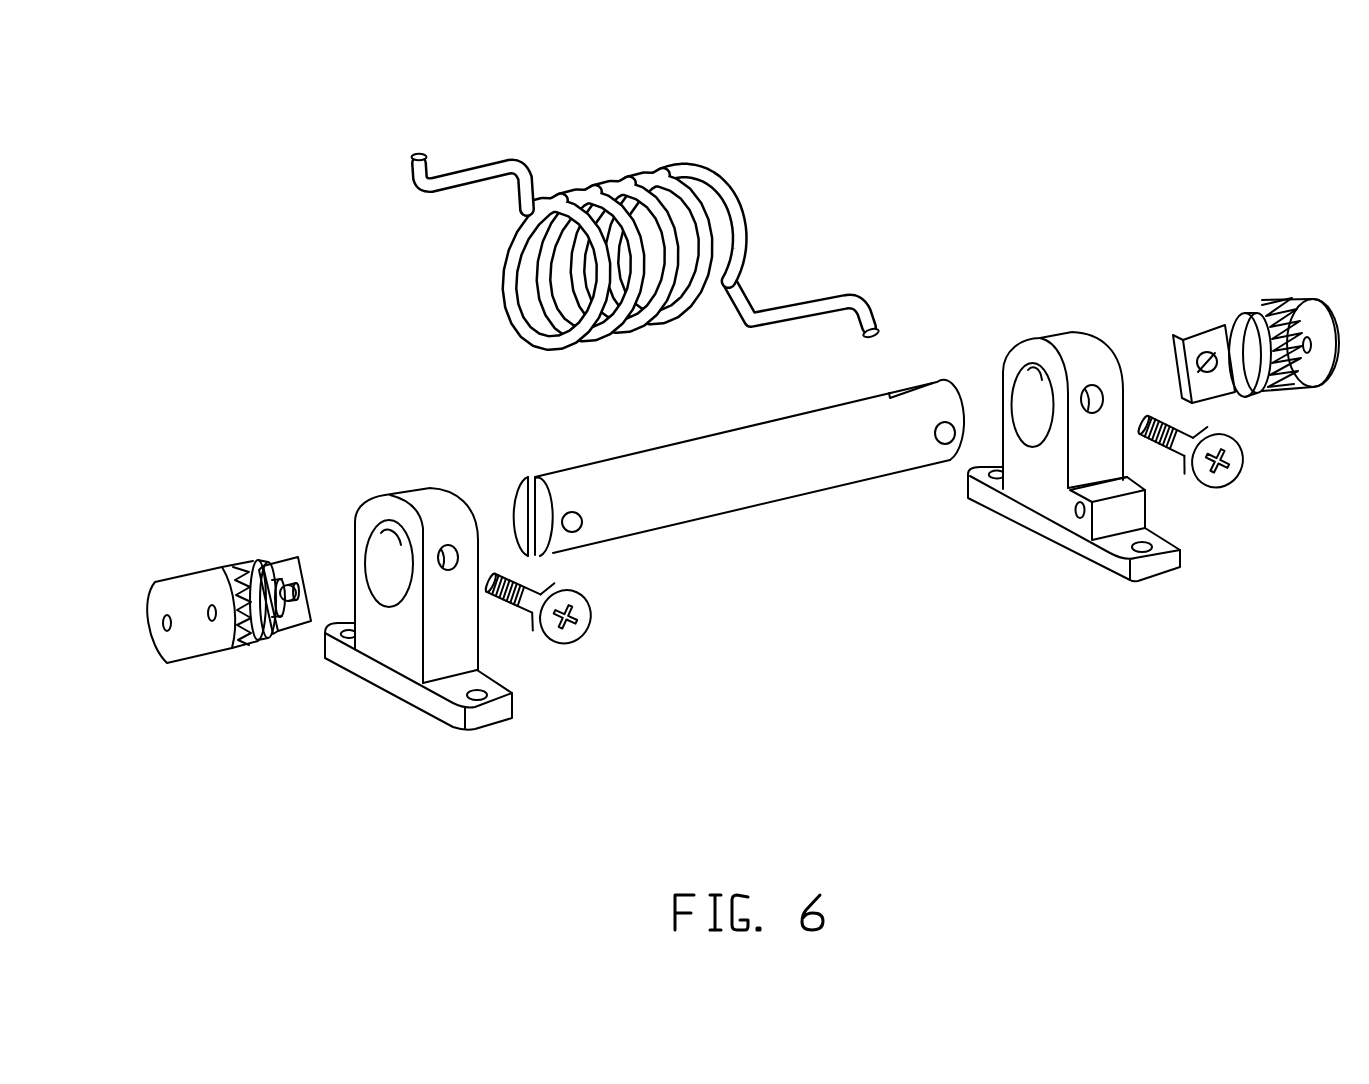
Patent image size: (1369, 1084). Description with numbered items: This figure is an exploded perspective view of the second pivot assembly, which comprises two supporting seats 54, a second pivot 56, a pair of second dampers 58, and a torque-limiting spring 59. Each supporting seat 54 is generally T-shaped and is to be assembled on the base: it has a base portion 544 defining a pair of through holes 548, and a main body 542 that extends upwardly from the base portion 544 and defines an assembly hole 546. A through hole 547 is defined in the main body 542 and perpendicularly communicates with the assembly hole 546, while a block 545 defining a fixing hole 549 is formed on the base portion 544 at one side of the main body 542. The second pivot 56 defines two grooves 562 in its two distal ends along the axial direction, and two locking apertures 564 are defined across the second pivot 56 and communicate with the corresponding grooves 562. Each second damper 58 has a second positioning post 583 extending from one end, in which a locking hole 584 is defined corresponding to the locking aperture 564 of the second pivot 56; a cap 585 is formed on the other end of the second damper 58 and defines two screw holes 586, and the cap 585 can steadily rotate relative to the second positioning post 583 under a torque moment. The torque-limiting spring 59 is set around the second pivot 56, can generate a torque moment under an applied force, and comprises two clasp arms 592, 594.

The supporting seat 54 is at (409, 482).
The main body 542 is at (1032, 472).
The base portion 544 is at (1160, 567).
The block 545 is at (1127, 523).
The assembly hole 546 is at (1022, 393).
The through hole 547 is at (1097, 393).
The through hole 548 is at (1147, 545).
The fixing hole 549 is at (1080, 508).
The second pivot 56 is at (739, 494).
The groove 562 is at (567, 468).
The locking aperture 564 is at (580, 523).
The second damper 58 is at (209, 599).
The second positioning post 583 is at (300, 618).
The locking hole 584 is at (285, 593).
The cap 585 is at (173, 590).
The screw hole 586 is at (163, 623).
The torque-limiting spring 59 is at (632, 152).
The clasp arm 592 is at (487, 170).
The clasp arm 594 is at (805, 323).